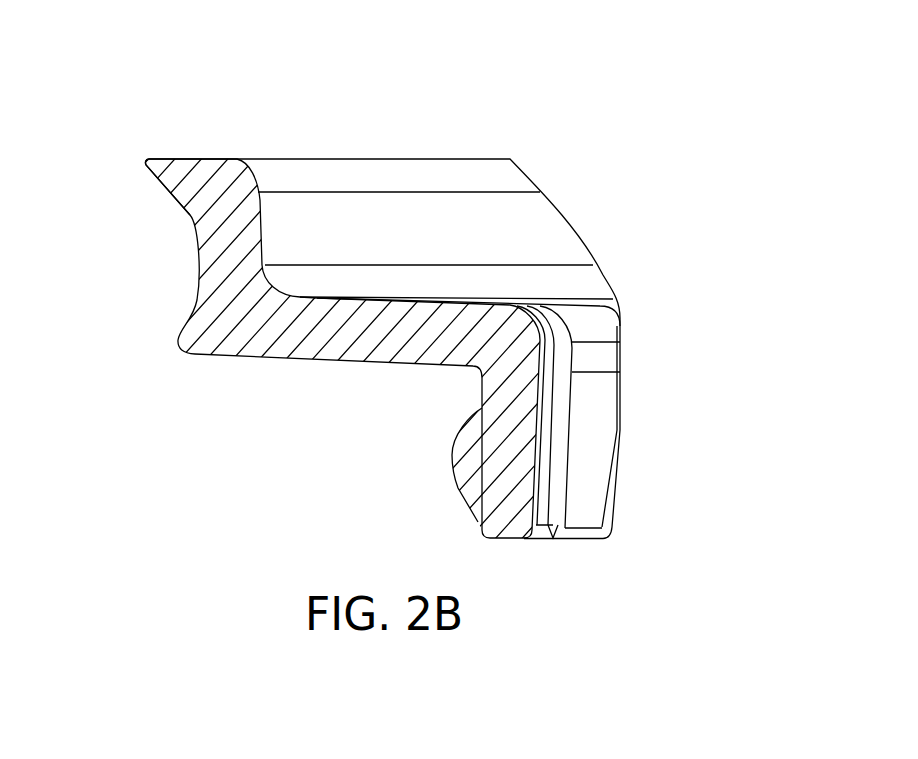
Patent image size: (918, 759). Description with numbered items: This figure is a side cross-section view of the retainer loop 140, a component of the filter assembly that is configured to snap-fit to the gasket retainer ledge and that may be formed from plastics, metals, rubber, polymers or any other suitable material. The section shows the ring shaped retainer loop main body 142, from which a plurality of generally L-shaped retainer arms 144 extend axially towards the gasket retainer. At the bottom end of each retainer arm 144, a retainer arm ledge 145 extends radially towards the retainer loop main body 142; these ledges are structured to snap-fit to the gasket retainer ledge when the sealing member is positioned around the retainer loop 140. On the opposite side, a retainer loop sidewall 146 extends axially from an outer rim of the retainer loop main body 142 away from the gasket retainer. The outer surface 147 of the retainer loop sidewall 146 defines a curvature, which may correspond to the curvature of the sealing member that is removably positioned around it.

The retainer loop 140 is at (483, 124).
The retainer loop main body 142 is at (357, 203).
The retainer arms 144 is at (513, 447).
The retainer arm ledge 145 is at (460, 452).
The retainer loop sidewall 146 is at (218, 202).
The outer surface 147 is at (188, 223).